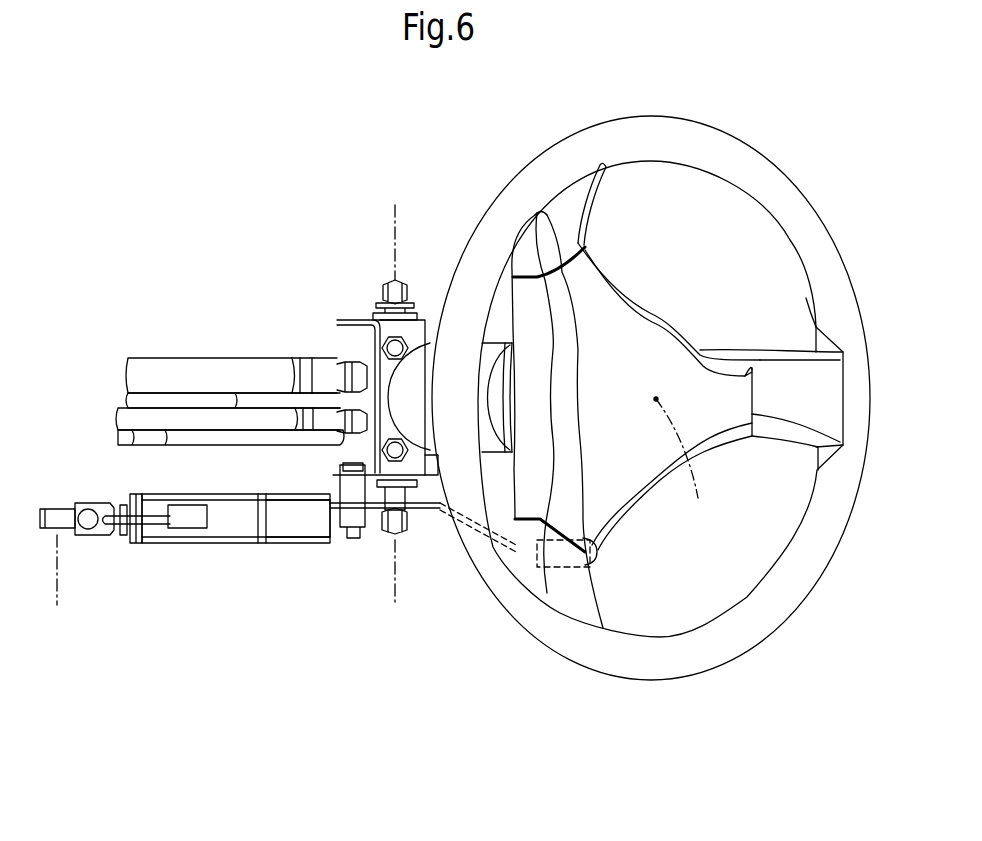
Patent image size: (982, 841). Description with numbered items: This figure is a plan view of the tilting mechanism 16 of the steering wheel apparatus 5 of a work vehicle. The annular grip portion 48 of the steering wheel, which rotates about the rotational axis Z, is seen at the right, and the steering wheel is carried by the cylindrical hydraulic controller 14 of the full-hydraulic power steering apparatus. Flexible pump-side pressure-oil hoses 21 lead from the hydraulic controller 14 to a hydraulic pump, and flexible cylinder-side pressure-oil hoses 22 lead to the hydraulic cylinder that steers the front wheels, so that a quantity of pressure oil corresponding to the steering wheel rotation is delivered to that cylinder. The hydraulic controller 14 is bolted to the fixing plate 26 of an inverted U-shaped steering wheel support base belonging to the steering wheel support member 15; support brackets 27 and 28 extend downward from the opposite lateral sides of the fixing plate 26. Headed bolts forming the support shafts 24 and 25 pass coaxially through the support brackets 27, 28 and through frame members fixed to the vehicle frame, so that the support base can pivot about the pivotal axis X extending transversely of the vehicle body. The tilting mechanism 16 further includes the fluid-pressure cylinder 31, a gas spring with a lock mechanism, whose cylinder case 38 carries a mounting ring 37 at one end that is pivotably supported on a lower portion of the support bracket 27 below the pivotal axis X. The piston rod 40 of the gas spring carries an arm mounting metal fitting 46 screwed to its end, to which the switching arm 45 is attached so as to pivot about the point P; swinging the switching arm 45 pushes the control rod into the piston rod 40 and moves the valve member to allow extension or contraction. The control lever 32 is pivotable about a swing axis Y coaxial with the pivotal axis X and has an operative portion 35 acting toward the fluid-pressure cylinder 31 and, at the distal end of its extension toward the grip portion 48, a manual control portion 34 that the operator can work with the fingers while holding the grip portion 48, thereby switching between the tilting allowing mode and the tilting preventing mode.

The steering wheel apparatus 5 is at (460, 158).
The hydraulic controller 14 is at (425, 318).
The steering wheel support member 15 is at (352, 318).
The tilting mechanism 16 is at (338, 565).
The pump-side pressure-oil hoses 21 is at (197, 368).
The cylinder-side pressure-oil hoses 22 is at (233, 425).
The support shaft 24 is at (405, 540).
The support shaft 25 is at (393, 280).
The fixing plate 26 is at (437, 478).
The support bracket 27 is at (338, 475).
The support bracket 28 is at (342, 320).
The fluid-pressure cylinder 31 is at (222, 548).
The control lever 32 is at (293, 510).
The manual control portion 34 is at (603, 556).
The operative portion 35 is at (178, 535).
The mounting ring 37 is at (355, 540).
The cylinder case 38 is at (250, 543).
The piston rod 40 is at (130, 543).
The switching arm 45 is at (88, 505).
The arm mounting metal fitting 46 is at (58, 509).
The grip portion 48 is at (707, 650).